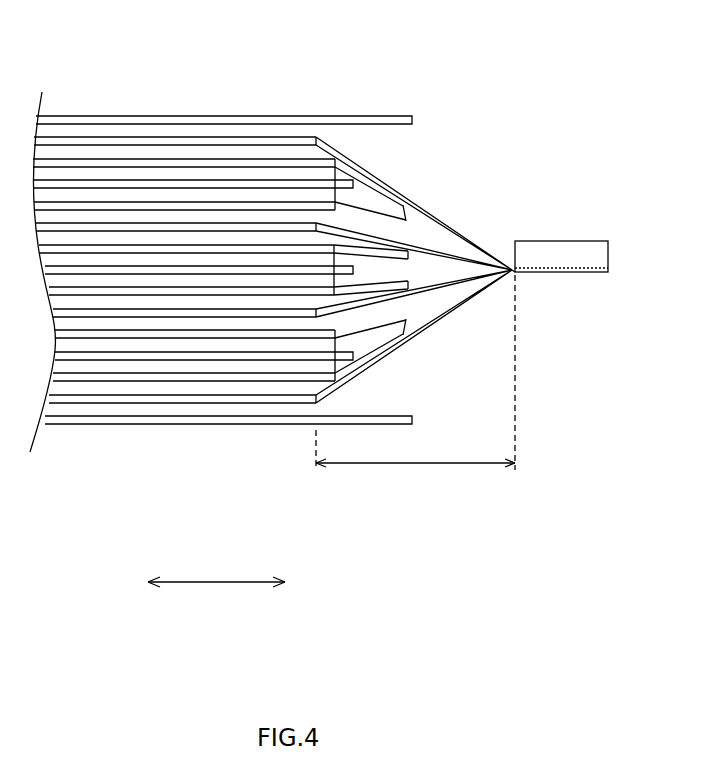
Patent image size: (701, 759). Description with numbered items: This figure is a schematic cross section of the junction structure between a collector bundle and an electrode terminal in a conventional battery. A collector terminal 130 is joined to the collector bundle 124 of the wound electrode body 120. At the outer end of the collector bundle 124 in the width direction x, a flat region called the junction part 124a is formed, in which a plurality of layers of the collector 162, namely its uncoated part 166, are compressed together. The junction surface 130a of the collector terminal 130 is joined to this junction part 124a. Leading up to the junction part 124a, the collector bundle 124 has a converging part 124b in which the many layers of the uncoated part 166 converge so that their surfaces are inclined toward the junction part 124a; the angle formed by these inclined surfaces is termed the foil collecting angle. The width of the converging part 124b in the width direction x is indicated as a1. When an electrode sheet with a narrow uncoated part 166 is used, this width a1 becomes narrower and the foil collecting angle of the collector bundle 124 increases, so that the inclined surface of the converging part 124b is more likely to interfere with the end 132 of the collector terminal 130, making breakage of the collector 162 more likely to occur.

The wound electrode body 120 is at (433, 83).
The collector bundle 124 is at (308, 270).
The junction part 124a is at (548, 266).
The converging part 124b is at (421, 274).
The collector terminal 130 is at (578, 268).
The junction surface 130a is at (571, 272).
The end of collector terminal 132 is at (516, 275).
The uncoated part 166 is at (414, 340).
The collector 162 is at (398, 350).
The width of converging part a1 is at (415, 463).
The width direction x is at (216, 594).